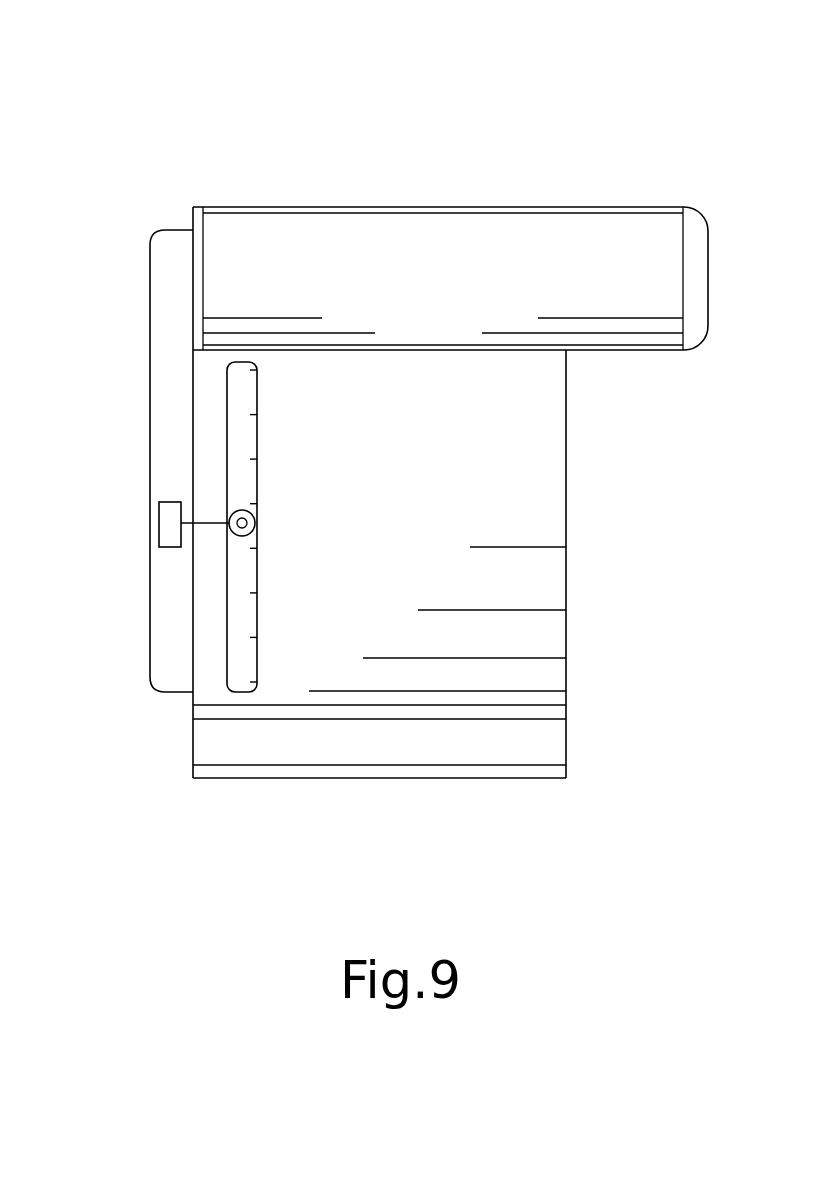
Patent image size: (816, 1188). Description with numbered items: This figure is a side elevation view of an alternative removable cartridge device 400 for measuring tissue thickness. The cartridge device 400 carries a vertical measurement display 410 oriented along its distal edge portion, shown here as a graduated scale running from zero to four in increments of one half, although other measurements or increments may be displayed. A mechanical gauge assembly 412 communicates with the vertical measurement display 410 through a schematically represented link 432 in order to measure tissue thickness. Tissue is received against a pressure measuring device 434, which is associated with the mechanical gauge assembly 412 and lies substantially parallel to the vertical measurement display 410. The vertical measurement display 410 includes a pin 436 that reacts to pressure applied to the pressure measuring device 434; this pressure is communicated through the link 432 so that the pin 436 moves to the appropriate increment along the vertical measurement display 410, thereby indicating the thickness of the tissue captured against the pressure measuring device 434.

The cartridge device 400 is at (628, 108).
The pressure measuring device 434 is at (172, 240).
The vertical measurement display 410 is at (238, 382).
The mechanical gauge assembly 412 is at (303, 473).
The link 432 is at (170, 500).
The pin 436 is at (255, 523).